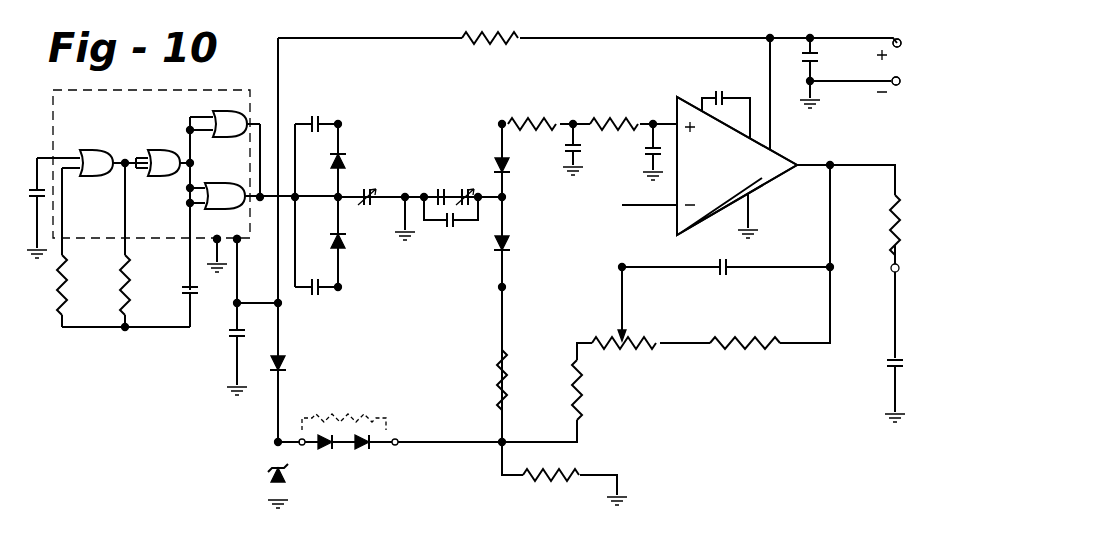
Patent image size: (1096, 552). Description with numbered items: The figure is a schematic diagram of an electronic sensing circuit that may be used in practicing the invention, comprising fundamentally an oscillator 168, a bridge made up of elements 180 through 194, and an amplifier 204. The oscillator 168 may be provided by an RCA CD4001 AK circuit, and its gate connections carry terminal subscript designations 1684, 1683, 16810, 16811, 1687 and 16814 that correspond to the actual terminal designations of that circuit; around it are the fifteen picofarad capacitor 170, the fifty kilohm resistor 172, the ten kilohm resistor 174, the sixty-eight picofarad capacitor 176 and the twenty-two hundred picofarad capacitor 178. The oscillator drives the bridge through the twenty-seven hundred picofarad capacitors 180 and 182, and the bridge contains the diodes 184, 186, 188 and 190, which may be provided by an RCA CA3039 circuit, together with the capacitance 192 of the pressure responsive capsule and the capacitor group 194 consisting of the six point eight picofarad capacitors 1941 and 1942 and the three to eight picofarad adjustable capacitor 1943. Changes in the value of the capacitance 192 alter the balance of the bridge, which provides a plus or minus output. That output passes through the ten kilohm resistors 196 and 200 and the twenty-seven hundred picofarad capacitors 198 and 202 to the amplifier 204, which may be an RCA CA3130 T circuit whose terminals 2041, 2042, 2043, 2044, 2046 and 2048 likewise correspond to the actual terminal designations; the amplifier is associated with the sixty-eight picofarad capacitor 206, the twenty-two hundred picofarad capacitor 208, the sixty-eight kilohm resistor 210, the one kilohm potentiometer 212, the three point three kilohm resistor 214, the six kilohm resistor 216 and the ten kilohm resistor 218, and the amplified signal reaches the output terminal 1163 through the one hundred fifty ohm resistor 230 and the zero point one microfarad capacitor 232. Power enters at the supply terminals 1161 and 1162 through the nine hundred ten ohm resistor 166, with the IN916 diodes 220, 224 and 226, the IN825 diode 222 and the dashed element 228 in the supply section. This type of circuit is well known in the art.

The positive supply terminal 1161 is at (892, 40).
The negative supply terminal 1162 is at (896, 86).
The output terminal 1163 is at (888, 265).
The resistor 166 is at (482, 44).
The oscillator 168 is at (178, 84).
The oscillator terminal 1684 is at (110, 152).
The oscillator terminal 1683 is at (182, 152).
The oscillator terminal 16810 is at (258, 120).
The oscillator terminal 16811 is at (251, 186).
The oscillator terminal 1687 is at (213, 238).
The oscillator terminal 16814 is at (238, 240).
The capacitor 170 is at (49, 197).
The resistor 172 is at (68, 291).
The resistor 174 is at (131, 284).
The capacitor 176 is at (185, 299).
The capacitor 178 is at (233, 340).
The capacitor 180 is at (326, 118).
The capacitor 182 is at (324, 296).
The diode 184 is at (348, 160).
The diode 186 is at (344, 252).
The diode 188 is at (508, 172).
The diode 190 is at (510, 243).
The capacitance 192 is at (364, 186).
The capacitor 1941 is at (428, 190).
The capacitor 1942 is at (446, 218).
The variable capacitor 1943 is at (462, 190).
The bridge capacitor group 194 is at (428, 228).
The resistor 196 is at (545, 104).
The capacitor 198 is at (564, 149).
The resistor 200 is at (610, 118).
The capacitor 202 is at (646, 149).
The amplifier 204 is at (753, 176).
The amplifier terminal 2041 is at (698, 100).
The amplifier terminal 2042 is at (674, 208).
The amplifier terminal 2043 is at (676, 118).
The amplifier terminal 2044 is at (747, 198).
The amplifier terminal 2046 is at (798, 164).
The amplifier terminal 2048 is at (750, 136).
The capacitor 206 is at (737, 166).
The capacitor 208 is at (733, 278).
The resistor 210 is at (739, 352).
The potentiometer 212 is at (603, 348).
The resistor 214 is at (582, 404).
The resistor 216 is at (555, 473).
The resistor 218 is at (492, 372).
The diode 220 is at (286, 360).
The zener diode 222 is at (268, 476).
The diode 224 is at (326, 452).
The diode 226 is at (365, 452).
The temperature compensation element 228 is at (358, 410).
The resistor 230 is at (888, 223).
The capacitor 232 is at (888, 368).